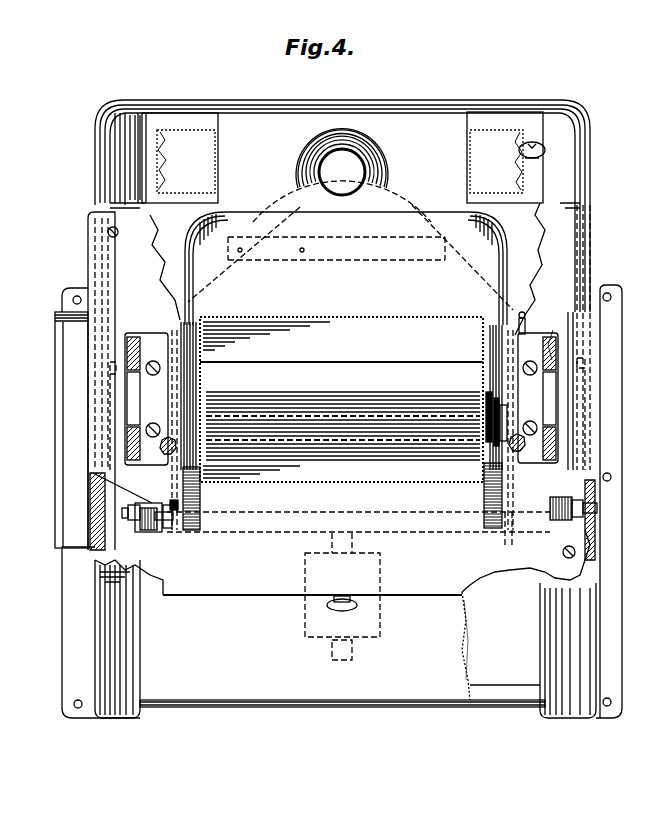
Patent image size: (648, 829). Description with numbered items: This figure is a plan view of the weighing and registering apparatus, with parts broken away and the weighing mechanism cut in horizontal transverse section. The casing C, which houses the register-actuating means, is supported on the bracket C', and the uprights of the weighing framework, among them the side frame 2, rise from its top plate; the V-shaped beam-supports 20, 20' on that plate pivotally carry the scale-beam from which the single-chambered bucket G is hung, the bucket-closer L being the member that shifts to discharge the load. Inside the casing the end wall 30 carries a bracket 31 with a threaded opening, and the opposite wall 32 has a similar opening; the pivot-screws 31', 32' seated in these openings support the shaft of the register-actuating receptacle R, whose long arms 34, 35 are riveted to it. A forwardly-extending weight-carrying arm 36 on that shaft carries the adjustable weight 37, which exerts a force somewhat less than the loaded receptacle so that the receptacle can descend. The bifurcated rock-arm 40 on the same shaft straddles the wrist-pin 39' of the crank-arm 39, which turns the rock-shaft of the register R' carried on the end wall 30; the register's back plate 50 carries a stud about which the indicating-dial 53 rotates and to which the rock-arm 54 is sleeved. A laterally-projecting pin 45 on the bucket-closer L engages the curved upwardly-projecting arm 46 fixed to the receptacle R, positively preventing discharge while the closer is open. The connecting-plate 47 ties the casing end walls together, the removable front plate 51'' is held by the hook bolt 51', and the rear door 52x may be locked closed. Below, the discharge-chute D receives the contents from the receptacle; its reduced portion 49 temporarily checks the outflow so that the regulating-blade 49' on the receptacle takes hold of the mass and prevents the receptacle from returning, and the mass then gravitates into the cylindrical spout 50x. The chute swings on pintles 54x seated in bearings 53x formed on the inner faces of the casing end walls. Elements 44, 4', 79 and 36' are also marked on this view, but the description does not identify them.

The discharge-chute D is at (342, 206).
The door 52x is at (198, 176).
The cylindrical spout 50x is at (368, 170).
The reduced portion 49 is at (327, 135).
The regulator or regulating-blade 49' is at (350, 245).
The casing or chamber C is at (568, 449).
The bracket C' is at (339, 632).
The wall 44 is at (530, 320).
The register R' is at (53, 418).
The register-actuating receptacle R is at (346, 268).
The bucket G is at (341, 399).
The bucket-closer L is at (268, 412).
The arm 35 is at (187, 343).
The left bearing block 4' is at (135, 399).
The side frame or upright 2 is at (557, 440).
The beam-support 20 is at (156, 464).
The beam-support 20' is at (532, 460).
The arm 34 is at (510, 353).
The pin 45 is at (480, 400).
The upwardly-projecting arm 46 is at (500, 398).
The bracket 79 is at (192, 530).
The weight-carrying arm 36 is at (358, 532).
The guide 36' is at (499, 541).
The weight 37 is at (380, 617).
The hook bolt 51' is at (312, 592).
The back plate 50 is at (92, 527).
The connecting-plate 47 is at (468, 588).
The front plate 51'' is at (481, 640).
The end wall 30 is at (106, 513).
The crank-arm 39 is at (103, 511).
The wrist or pin 39' is at (197, 521).
The bracket 31 is at (142, 531).
The pivot-screw 31' is at (168, 532).
The bifurcated rock-arm 40 is at (172, 510).
The wall 32 is at (564, 520).
The pivot-screw 32' is at (601, 501).
The bearings 53x is at (110, 365).
The pintles 54x is at (100, 380).
The indicating-dial 53 is at (582, 362).
The rock-arm 54 is at (586, 375).